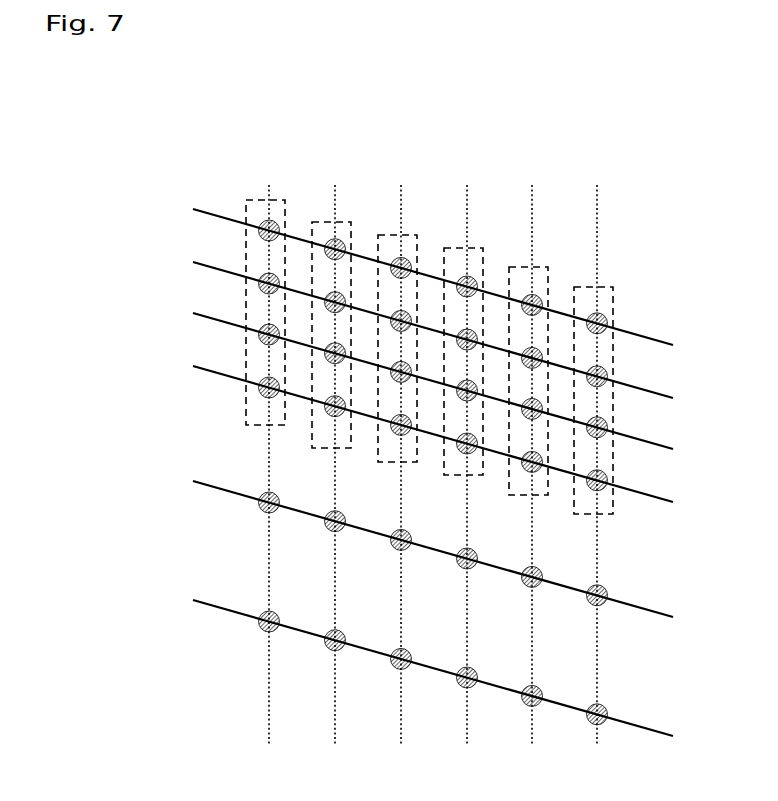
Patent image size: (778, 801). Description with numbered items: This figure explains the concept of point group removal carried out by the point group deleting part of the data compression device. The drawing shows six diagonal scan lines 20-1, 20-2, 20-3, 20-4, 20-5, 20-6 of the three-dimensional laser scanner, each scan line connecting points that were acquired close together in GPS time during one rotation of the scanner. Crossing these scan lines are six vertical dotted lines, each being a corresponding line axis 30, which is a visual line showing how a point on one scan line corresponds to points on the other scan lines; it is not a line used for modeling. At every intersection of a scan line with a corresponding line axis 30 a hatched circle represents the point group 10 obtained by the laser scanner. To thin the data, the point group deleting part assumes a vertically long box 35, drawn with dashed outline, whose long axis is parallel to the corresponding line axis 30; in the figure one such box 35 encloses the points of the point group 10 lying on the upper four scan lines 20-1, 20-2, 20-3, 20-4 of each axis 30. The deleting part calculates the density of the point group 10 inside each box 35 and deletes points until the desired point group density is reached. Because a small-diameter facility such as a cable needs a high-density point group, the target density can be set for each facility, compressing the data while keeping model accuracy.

The point group 10 is at (600, 312).
The corresponding line axis 30 is at (600, 202).
The vertically long box 35 is at (280, 203).
The scan line 20-1 is at (665, 337).
The scan line 20-2 is at (665, 390).
The scan line 20-3 is at (665, 441).
The scan line 20-4 is at (665, 494).
The scan line 20-5 is at (667, 612).
The scan line 20-6 is at (667, 731).